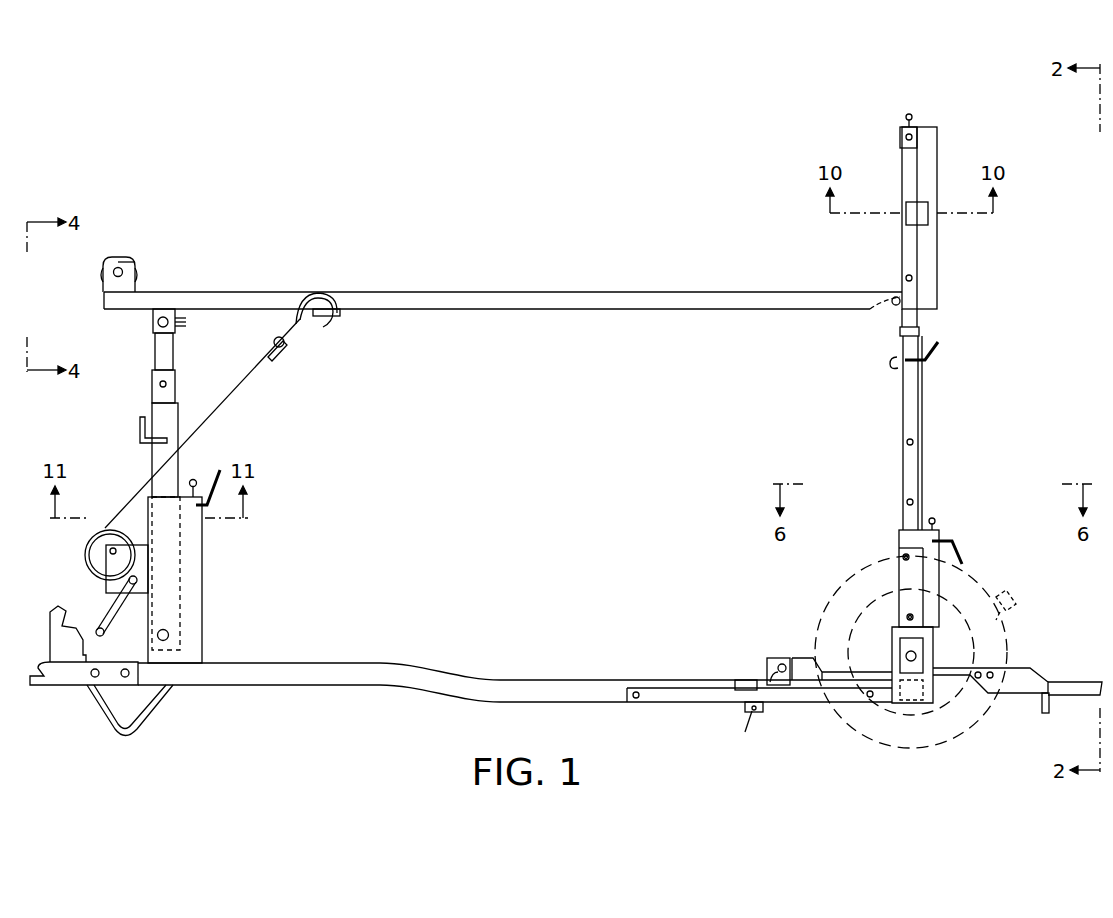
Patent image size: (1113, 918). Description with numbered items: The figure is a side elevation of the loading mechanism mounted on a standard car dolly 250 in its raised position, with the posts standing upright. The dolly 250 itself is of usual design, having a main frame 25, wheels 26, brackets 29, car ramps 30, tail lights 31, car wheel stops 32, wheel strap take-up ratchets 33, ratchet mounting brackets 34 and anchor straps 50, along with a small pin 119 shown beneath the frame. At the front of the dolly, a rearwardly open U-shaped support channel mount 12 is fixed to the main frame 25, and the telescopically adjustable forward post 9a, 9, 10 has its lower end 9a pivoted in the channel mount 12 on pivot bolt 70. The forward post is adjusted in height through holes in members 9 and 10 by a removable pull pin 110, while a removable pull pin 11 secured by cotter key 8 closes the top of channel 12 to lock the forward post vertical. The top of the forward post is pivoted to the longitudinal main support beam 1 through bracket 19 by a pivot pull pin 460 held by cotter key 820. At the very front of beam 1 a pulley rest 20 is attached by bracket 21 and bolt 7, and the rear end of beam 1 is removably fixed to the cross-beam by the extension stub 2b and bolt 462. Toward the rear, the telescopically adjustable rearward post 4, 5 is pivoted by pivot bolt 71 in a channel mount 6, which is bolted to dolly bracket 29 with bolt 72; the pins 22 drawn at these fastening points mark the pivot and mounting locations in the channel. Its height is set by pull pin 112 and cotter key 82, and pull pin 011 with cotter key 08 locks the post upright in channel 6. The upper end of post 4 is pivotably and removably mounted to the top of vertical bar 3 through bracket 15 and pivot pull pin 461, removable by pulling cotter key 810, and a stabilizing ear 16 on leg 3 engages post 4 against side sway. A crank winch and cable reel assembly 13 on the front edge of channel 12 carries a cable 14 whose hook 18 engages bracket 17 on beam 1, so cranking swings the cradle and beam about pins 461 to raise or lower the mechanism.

The longitudinal main support beam 1 is at (457, 292).
The pulley rest 20 is at (119, 257).
The bracket 21 is at (130, 259).
The bolt 7 is at (123, 272).
The cotter key 820 is at (151, 322).
The bracket 19 is at (153, 330).
The pivot pull pin 460 is at (179, 325).
The forward post upper member 10 is at (155, 352).
The forward post middle member 9 is at (152, 392).
The forward post lower end 9a is at (178, 412).
The support channel mount 12 is at (202, 577).
The pivot bolt 70 is at (169, 635).
The removable pull pin 110 is at (140, 433).
The cotter key 8 is at (193, 480).
The removable pull pin 11 is at (218, 474).
The take-up crank winch and cable reel assembly 13 is at (86, 556).
The cable 14 is at (232, 395).
The hook 18 is at (323, 330).
The bracket 17 is at (341, 313).
The standard car dolly 250 is at (352, 696).
The main frame 25 is at (452, 702).
The ratchet mounting bracket 34 is at (790, 695).
The anchor strap 50 is at (745, 709).
The pin 119 is at (747, 733).
The wheel strap take-up ratchet 33 is at (775, 658).
The car wheel stop 32 is at (805, 658).
The car ramp 30 is at (1065, 682).
The vertical bar 3 is at (938, 262).
The rearward post 4 is at (902, 278).
The bracket 15 is at (900, 133).
The pivot pull pin 461 is at (913, 137).
The cotter key 810 is at (909, 114).
The stabilizing ear or bracket 16 is at (929, 216).
The cross-beam extension stub 2b is at (885, 303).
The bolt 462 is at (895, 308).
The rearward post 5 is at (903, 438).
The pull pin 112 is at (940, 345).
The cotter key 82 is at (893, 366).
The cotter key 08 is at (933, 517).
The channel mount 6 is at (899, 541).
The pull pin 011 is at (950, 546).
The bracket 29 is at (903, 622).
The pivot pin 22 is at (906, 561).
The bolt 72 is at (909, 559).
The pivot bolt 71 is at (912, 620).
The wheel 26 is at (828, 630).
The tail light 31 is at (1008, 594).